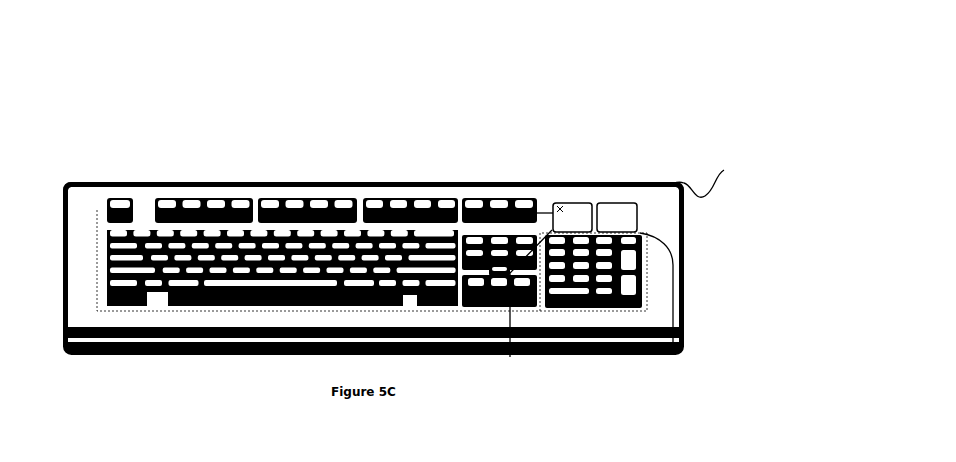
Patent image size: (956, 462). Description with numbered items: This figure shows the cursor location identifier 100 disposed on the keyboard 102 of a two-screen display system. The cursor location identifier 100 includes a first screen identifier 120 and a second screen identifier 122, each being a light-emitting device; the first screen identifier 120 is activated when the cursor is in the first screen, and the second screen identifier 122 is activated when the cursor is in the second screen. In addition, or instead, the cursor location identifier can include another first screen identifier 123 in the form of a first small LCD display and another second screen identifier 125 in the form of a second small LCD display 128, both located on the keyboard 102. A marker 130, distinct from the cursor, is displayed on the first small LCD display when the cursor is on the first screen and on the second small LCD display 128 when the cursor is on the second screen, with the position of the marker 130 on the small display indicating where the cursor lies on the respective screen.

The cursor location identifier 100 is at (589, 175).
The keyboard 102 is at (113, 181).
The first screen identifier 120 is at (582, 196).
The second screen identifier 122 is at (648, 196).
The first screen identifier 123 is at (545, 196).
The second screen identifier 125 is at (713, 179).
The second small LCD display 128 is at (510, 357).
The marker 130 is at (499, 199).